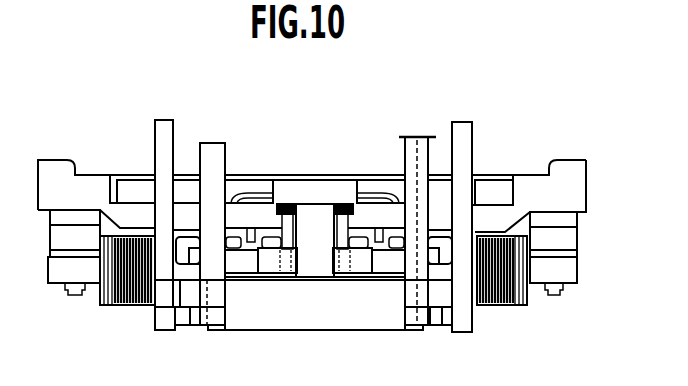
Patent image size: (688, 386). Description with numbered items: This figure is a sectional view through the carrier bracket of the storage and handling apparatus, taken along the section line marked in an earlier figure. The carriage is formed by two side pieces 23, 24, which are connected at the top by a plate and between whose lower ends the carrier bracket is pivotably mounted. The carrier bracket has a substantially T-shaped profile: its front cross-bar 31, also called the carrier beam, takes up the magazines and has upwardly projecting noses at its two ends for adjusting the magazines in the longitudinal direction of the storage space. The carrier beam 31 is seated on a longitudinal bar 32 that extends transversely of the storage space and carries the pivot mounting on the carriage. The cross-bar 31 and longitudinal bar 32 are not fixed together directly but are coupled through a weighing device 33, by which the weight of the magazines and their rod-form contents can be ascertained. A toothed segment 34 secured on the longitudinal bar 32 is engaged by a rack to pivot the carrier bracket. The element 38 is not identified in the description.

The side piece 23 is at (163, 125).
The side piece 24 is at (462, 128).
The front cross-bar 31 is at (549, 187).
The longitudinal bar 32 is at (307, 310).
The weighing device 33 is at (131, 307).
The toothed segment 34 is at (421, 140).
The left clamp block 38 is at (80, 158).